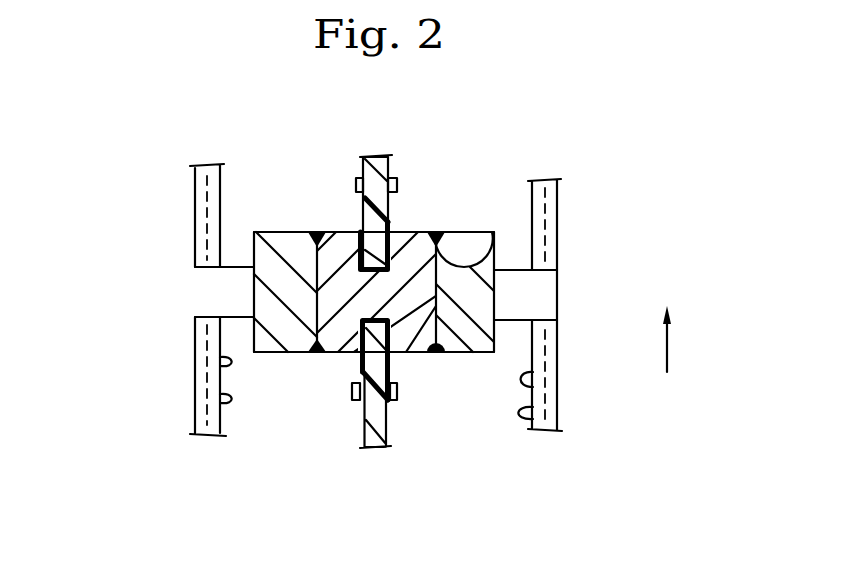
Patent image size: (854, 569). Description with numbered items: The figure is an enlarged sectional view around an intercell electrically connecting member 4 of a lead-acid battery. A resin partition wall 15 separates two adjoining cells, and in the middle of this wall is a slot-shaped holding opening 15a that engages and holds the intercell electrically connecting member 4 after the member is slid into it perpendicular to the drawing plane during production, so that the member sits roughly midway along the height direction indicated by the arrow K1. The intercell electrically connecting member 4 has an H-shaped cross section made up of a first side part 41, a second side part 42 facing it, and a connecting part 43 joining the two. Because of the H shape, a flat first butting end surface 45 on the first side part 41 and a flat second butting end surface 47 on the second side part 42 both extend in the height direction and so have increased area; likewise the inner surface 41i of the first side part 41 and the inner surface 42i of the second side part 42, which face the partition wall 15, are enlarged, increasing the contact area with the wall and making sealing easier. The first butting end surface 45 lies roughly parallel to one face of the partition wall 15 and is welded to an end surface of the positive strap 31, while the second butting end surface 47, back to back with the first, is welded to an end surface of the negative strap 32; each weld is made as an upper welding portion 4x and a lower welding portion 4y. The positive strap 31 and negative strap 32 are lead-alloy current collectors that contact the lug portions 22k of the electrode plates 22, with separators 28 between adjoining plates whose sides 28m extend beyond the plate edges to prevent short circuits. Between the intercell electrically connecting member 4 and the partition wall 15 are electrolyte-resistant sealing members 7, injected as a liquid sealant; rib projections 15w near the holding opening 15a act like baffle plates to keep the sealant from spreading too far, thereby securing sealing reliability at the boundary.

The intercell electrically connecting member 4 is at (411, 353).
The upper welding portion 4x is at (317, 233).
The lower welding portion 4y is at (313, 335).
The sealing member 7 is at (352, 353).
The partition wall 15 is at (372, 435).
The holding opening 15a is at (392, 212).
The rib projection 15w is at (369, 263).
The electrode plate 22 is at (172, 242).
The lug portion 22k is at (212, 295).
The separator 28 is at (195, 407).
The side of separator 28m is at (213, 365).
The positive strap 31 is at (472, 236).
The negative strap 32 is at (272, 258).
The first side part 41 is at (405, 353).
The inner surface of first side part 41i is at (397, 178).
The second side part 42 is at (343, 330).
The inner surface of second side part 42i is at (377, 290).
The connecting part 43 is at (330, 234).
The first butting end surface 45 is at (455, 295).
The second butting end surface 47 is at (316, 307).
The height direction arrow K1 is at (670, 343).